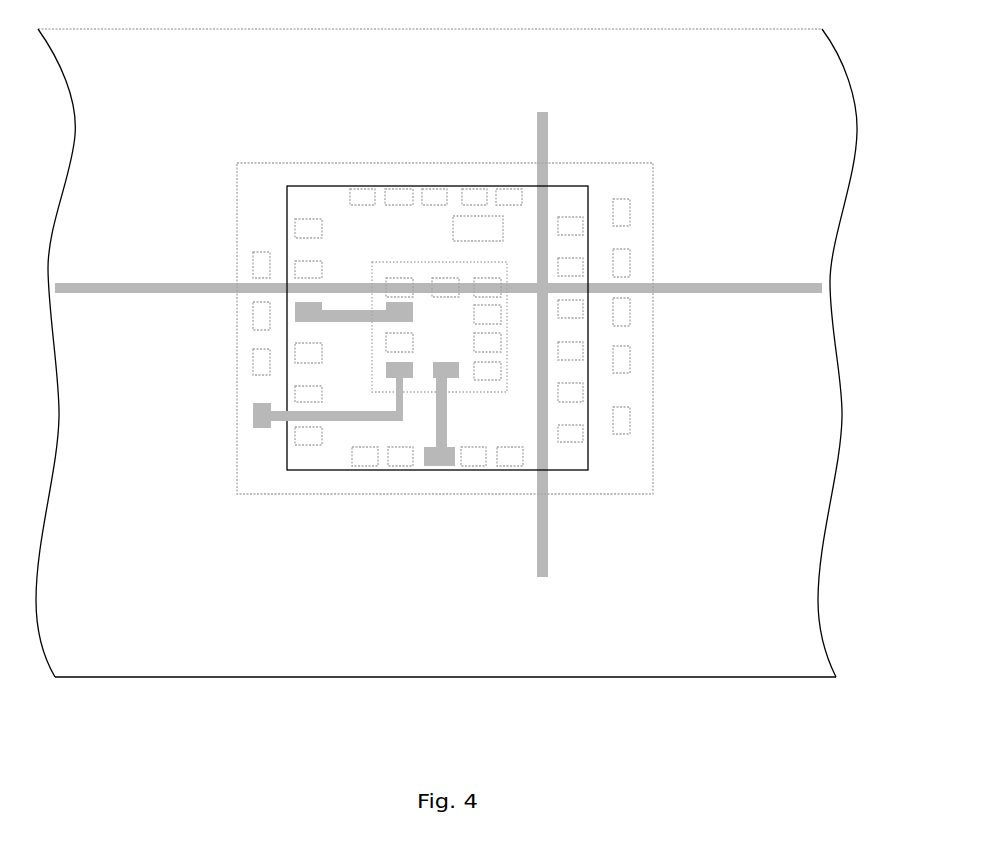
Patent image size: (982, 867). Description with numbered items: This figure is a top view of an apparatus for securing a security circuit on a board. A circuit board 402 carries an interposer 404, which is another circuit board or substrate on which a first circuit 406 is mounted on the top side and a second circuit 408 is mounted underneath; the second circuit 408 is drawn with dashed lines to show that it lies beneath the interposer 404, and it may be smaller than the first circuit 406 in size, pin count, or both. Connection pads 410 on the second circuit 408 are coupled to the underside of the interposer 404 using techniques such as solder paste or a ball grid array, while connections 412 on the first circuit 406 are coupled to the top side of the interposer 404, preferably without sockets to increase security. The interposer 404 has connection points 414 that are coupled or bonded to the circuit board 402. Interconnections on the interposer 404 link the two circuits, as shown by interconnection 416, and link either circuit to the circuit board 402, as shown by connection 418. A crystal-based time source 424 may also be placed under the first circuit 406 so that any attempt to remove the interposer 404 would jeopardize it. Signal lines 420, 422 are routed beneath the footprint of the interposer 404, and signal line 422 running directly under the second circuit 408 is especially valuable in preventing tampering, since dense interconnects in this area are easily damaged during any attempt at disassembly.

The circuit board 402 is at (422, 677).
The interposer 404 is at (382, 162).
The first circuit 406 is at (458, 472).
The second circuit 408 is at (458, 262).
The connection pads 410 is at (491, 380).
The connections 412 is at (296, 228).
The connection points 414 is at (631, 360).
The interconnection 416 is at (440, 450).
The connection 418 is at (342, 415).
The signal line 420 is at (548, 527).
The signal line 422 is at (775, 292).
The crystal-based time source 424 is at (490, 215).